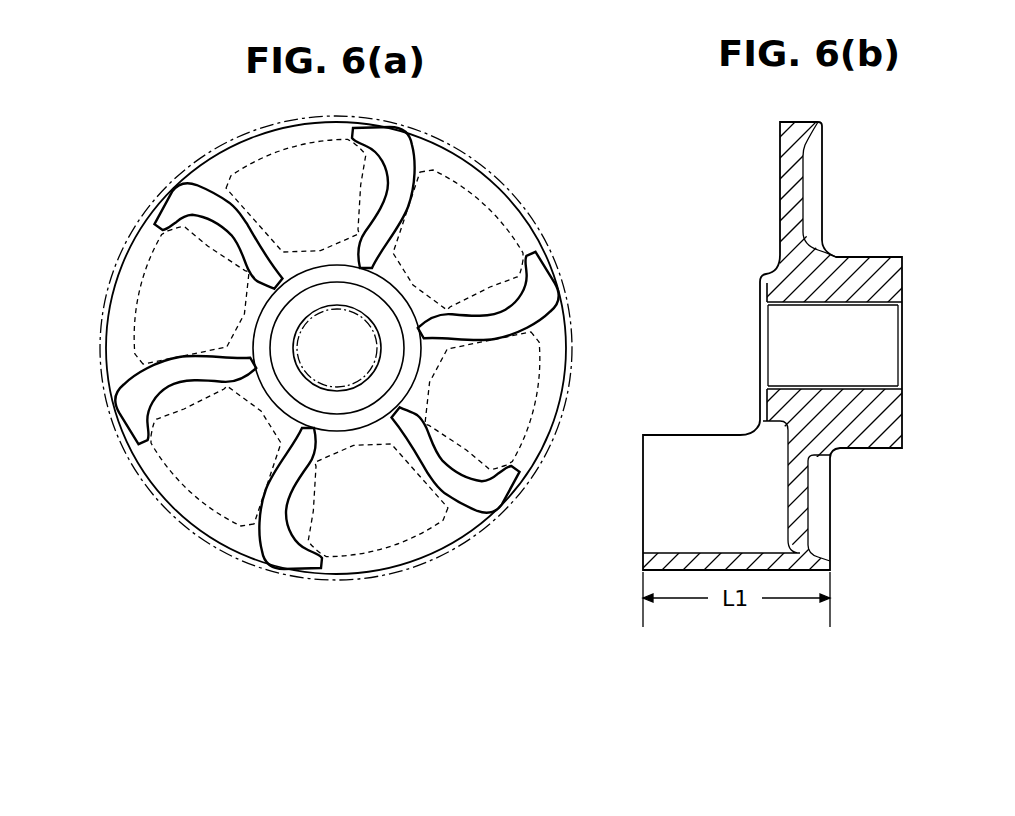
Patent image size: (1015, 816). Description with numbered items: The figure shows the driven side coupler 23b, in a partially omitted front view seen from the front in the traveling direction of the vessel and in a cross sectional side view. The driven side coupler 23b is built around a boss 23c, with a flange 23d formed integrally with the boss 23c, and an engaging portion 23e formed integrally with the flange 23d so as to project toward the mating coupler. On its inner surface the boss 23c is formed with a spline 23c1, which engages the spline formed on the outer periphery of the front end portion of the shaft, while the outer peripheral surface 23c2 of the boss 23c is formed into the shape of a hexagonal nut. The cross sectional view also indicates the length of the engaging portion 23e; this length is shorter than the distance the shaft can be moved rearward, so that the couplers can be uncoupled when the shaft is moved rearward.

In FIG. 6B, the driven side coupler 23b is at (845, 168).
In FIG. 6B, the boss 23c is at (869, 393).
In FIG. 6A, the spline 23c1 is at (372, 327).
In FIG. 6B, the spline 23c1 is at (863, 384).
In FIG. 6B, the outer peripheral surface 23c2 is at (880, 449).
In FIG. 6A, the flange 23d is at (555, 243).
In FIG. 6B, the flange 23d is at (803, 507).
In FIG. 6A, the engaging portion 23e is at (503, 307).
In FIG. 6B, the engaging portion 23e is at (676, 478).